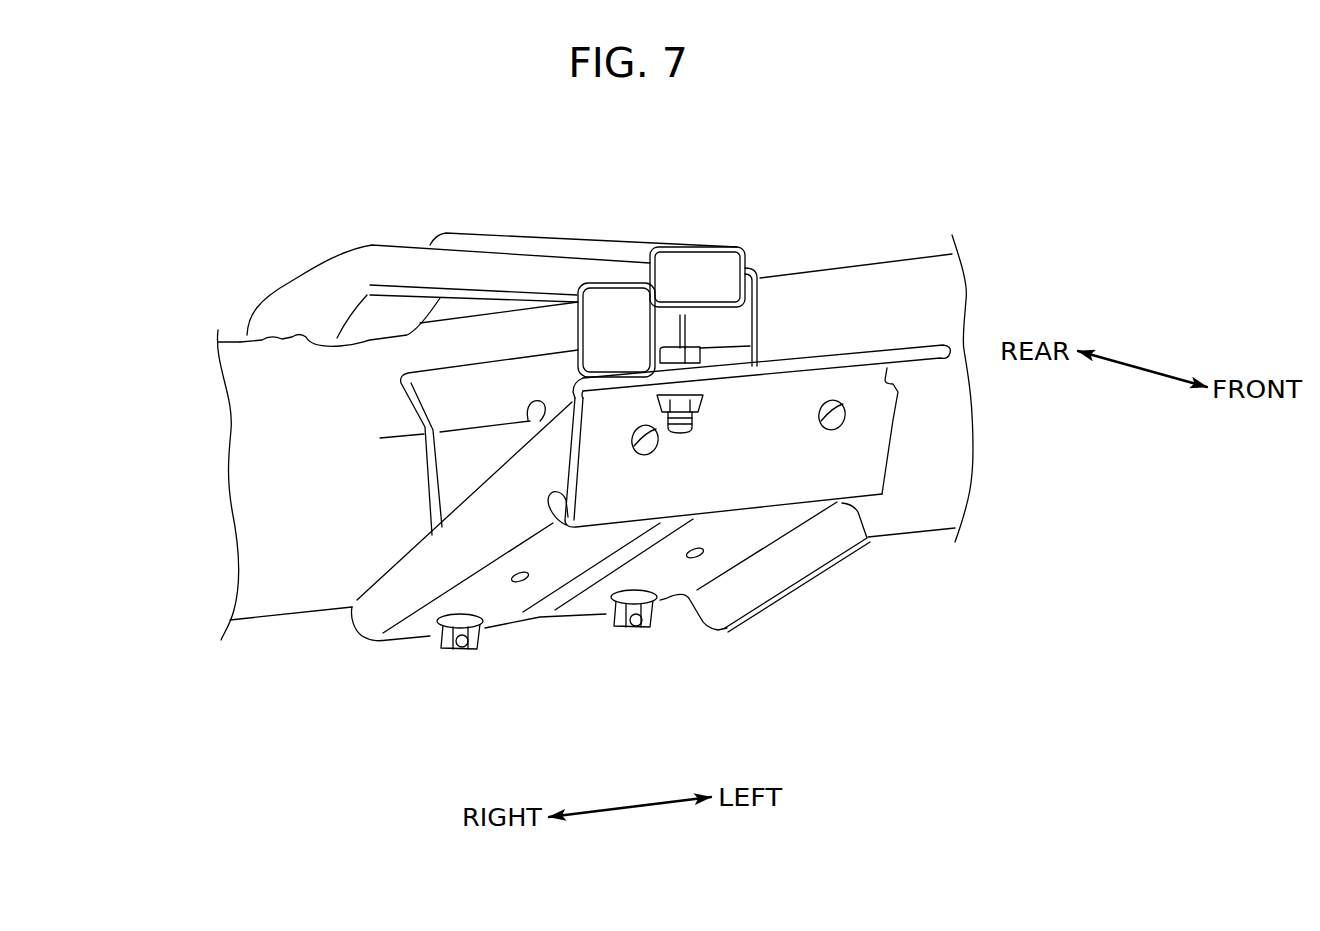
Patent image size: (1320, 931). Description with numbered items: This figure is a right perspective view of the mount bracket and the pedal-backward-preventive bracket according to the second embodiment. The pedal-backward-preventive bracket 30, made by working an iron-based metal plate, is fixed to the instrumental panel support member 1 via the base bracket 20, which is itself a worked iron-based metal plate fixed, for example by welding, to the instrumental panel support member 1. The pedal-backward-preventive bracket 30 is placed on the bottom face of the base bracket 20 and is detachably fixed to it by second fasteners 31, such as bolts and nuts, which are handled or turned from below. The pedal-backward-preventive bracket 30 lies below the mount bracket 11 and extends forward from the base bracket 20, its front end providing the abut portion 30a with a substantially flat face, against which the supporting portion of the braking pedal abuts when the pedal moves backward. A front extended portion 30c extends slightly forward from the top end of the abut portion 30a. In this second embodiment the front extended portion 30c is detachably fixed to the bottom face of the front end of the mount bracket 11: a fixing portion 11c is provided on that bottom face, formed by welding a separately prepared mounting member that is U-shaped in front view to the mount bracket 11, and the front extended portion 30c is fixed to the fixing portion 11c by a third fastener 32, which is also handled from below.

The instrumental panel support member 1 is at (278, 598).
The mount bracket 11 is at (578, 243).
The fixing portion 11c is at (613, 307).
The base bracket 20 is at (470, 408).
The pedal-backward-preventive bracket 30 is at (645, 447).
The abut portion 30a is at (793, 473).
The front extended portion 30c is at (853, 353).
The second fasteners 31 is at (462, 650).
The third fastener 32 is at (698, 418).